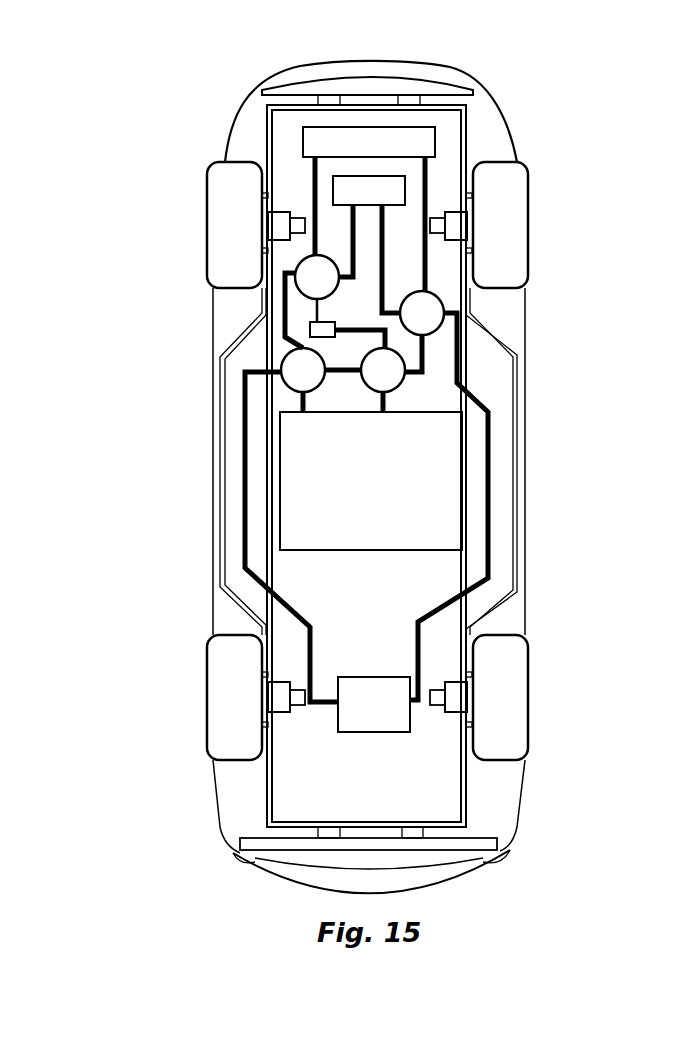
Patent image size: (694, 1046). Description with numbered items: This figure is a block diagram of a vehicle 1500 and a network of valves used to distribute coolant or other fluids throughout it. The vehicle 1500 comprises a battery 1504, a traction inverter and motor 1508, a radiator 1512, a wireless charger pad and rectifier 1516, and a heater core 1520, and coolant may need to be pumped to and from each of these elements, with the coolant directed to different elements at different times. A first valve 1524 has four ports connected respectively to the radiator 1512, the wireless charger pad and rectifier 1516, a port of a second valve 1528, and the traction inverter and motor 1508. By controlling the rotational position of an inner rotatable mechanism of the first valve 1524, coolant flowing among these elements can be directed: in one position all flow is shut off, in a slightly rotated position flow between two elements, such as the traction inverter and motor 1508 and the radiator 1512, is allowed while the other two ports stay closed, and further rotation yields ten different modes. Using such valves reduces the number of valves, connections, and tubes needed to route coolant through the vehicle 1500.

The vehicle 1500 is at (585, 130).
The battery 1504 is at (465, 533).
The traction inverter and motor 1508 is at (410, 732).
The radiator 1512 is at (437, 138).
The wireless charger pad and rectifier 1516 is at (332, 178).
The heater core 1520 is at (312, 327).
The first valve 1524 is at (435, 333).
The second valve 1528 is at (405, 384).